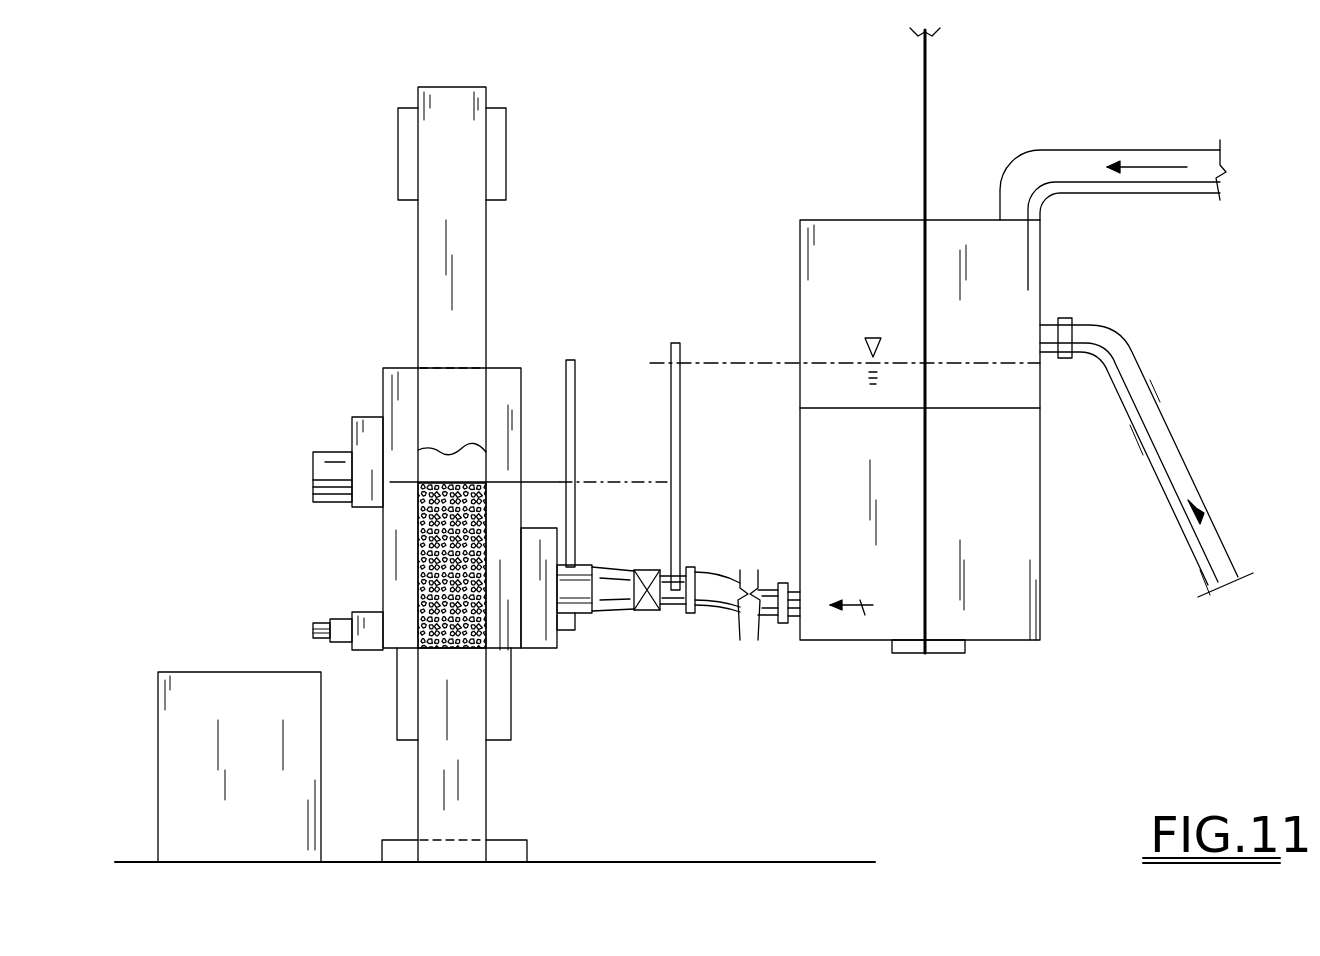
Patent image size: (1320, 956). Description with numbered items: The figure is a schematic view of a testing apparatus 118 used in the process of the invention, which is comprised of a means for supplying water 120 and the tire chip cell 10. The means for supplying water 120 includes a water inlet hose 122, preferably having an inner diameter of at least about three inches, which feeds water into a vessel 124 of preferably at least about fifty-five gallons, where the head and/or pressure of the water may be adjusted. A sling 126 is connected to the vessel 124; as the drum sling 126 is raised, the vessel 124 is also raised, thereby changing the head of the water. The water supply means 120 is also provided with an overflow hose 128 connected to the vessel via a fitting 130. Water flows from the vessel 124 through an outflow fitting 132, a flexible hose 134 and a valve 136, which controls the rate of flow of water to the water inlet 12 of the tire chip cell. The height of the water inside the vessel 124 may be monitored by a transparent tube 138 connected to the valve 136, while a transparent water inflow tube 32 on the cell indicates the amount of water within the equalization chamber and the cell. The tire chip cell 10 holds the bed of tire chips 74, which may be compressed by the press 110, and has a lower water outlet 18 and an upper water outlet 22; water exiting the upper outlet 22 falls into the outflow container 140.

The tire chip cell 10 is at (375, 383).
The water inlet 12 is at (578, 635).
The lower water outlet 18 is at (345, 615).
The upper water outlet 22 is at (312, 463).
The water inflow tube 32 is at (576, 376).
The bed of tire chips 74 is at (445, 482).
The press 110 is at (493, 103).
The testing apparatus 118 is at (683, 135).
The means for supplying water 120 is at (1222, 197).
The water inlet hose 122 is at (1097, 150).
The vessel 124 is at (1012, 642).
The sling 126 is at (928, 86).
The overflow hose 128 is at (1195, 456).
The fitting 130 is at (1065, 318).
The outflow fitting 132 is at (785, 627).
The flexible hose 134 is at (723, 614).
The valve 136 is at (652, 612).
The transparent tube 138 is at (681, 408).
The container 140 is at (236, 673).